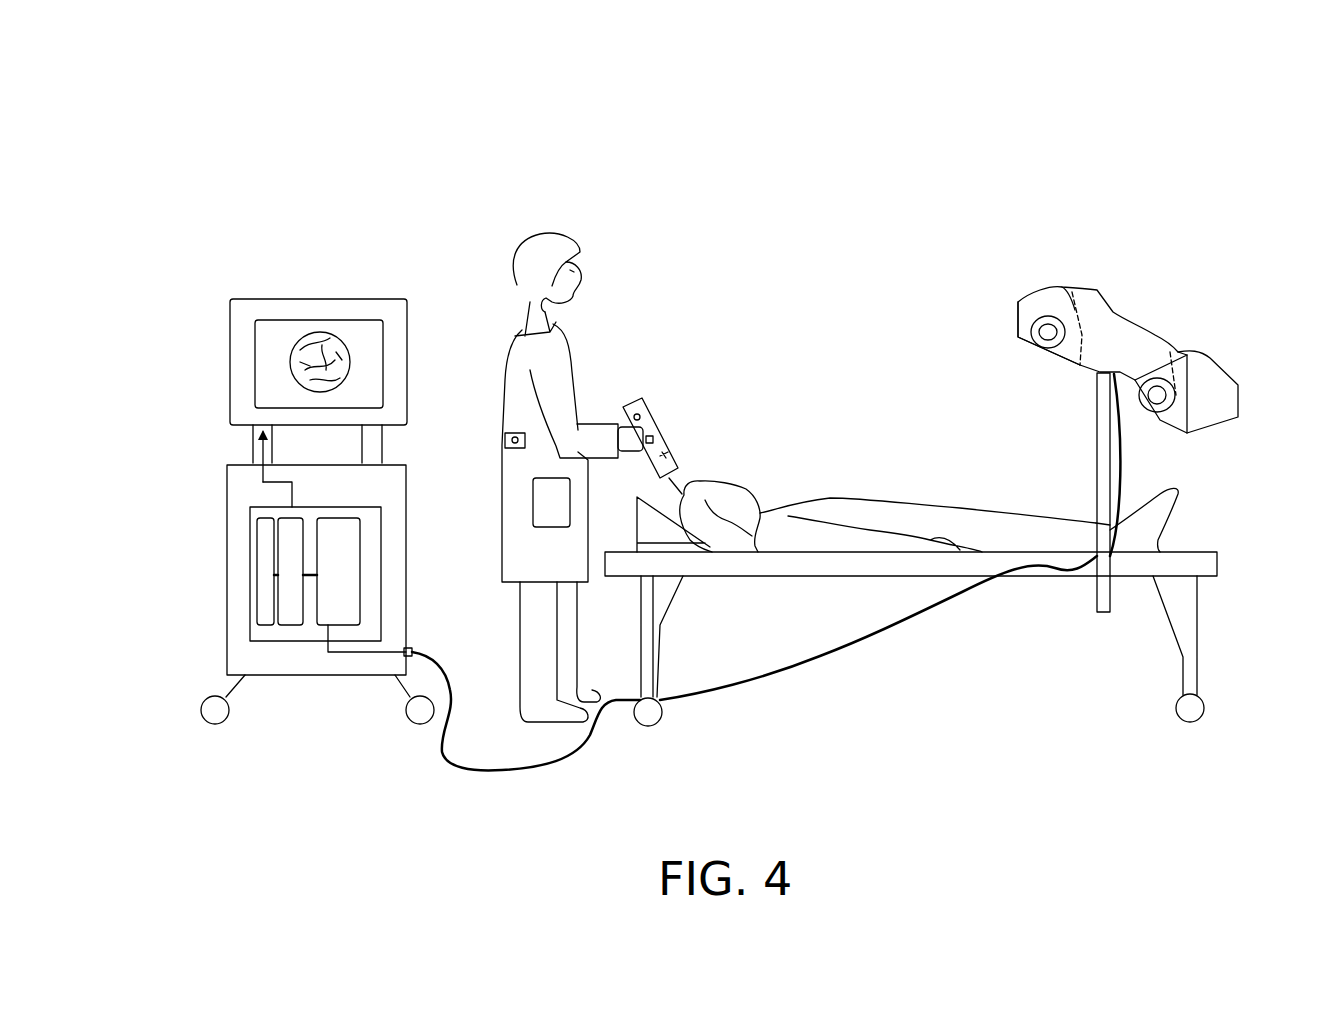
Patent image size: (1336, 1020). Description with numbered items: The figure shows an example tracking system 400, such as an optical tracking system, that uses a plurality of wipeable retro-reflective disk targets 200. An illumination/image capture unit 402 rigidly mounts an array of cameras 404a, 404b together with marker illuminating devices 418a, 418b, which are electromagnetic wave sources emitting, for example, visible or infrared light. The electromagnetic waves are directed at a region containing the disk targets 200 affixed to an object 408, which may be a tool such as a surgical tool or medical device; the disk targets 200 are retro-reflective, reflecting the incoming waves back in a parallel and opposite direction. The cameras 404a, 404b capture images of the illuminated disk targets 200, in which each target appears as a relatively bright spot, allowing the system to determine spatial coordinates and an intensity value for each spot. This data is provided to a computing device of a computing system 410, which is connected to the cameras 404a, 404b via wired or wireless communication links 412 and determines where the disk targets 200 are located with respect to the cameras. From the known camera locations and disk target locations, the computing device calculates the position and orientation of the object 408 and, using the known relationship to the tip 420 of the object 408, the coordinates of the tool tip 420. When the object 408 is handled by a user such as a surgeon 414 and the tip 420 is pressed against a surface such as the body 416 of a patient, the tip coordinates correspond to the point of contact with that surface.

The tracking system 400 is at (114, 146).
The computing system 410 is at (381, 522).
The surgeon 414 is at (510, 367).
The object 408 is at (648, 400).
The wipeable retro-reflective disk target 200 is at (664, 429).
The tip 420 is at (688, 500).
The body 416 is at (929, 494).
The communication links 412 is at (890, 634).
The illumination/image capture unit 402 is at (1218, 402).
The camera 404a is at (1095, 290).
The camera 404b is at (1187, 355).
The marker illuminating device 418a is at (1067, 340).
The marker illuminating device 418b is at (1178, 397).